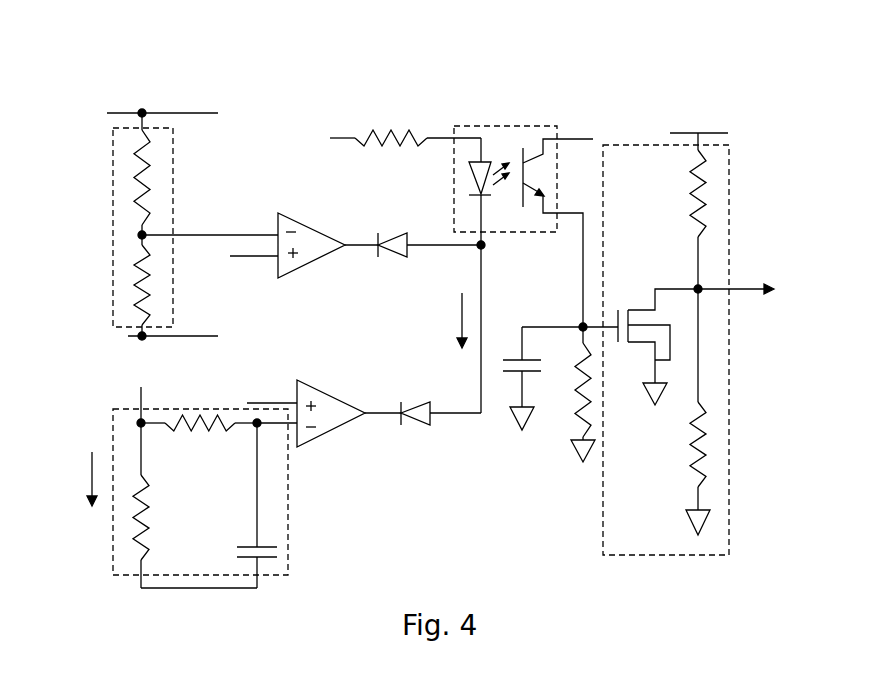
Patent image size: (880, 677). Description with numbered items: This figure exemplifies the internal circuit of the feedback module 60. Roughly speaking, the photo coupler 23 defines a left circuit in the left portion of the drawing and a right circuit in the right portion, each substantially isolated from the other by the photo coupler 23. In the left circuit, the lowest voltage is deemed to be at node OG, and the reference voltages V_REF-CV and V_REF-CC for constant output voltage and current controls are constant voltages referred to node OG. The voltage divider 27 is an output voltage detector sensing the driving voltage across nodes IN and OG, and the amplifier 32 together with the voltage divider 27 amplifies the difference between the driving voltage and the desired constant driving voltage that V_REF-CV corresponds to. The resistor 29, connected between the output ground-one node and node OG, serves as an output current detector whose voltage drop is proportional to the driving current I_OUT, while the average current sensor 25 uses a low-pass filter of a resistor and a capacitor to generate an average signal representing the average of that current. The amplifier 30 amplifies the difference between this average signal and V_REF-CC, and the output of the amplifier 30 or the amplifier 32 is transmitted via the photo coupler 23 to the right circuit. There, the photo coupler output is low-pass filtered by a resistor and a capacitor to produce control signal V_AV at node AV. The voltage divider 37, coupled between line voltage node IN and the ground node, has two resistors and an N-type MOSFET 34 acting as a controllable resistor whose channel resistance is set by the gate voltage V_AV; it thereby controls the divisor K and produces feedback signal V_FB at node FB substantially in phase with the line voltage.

The feedback module 60 is at (391, 61).
The photo coupler 23 is at (510, 125).
The voltage divider 27 is at (174, 138).
The amplifier 32 is at (312, 226).
The amplifier 30 is at (325, 392).
The resistor 29 is at (150, 533).
The average current sensor 25 is at (288, 470).
The N-type MOSFET 34 is at (637, 300).
The voltage divider 37 is at (601, 486).